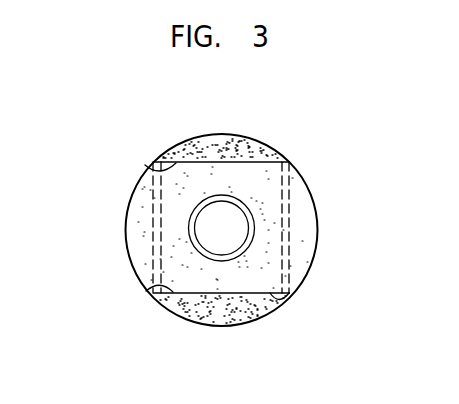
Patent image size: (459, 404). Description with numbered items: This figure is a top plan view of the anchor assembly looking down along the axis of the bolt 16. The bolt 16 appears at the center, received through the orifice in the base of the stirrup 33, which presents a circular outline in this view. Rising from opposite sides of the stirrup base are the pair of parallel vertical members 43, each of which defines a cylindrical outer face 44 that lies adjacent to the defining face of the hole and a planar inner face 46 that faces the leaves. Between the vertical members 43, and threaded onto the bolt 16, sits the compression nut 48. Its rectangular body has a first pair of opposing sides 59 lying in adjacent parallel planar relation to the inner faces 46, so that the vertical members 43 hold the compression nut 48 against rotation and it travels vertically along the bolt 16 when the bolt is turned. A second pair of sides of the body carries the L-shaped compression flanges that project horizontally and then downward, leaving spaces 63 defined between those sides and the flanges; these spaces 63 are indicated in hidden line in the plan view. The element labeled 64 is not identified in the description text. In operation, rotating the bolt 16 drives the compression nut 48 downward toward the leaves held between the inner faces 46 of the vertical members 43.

The bolt 16 is at (226, 229).
The stirrup 33 is at (193, 322).
The vertical members 43 is at (251, 141).
The cylindrical outer face 44 is at (222, 134).
The planar inner face 46 is at (145, 165).
The compression nut 48 is at (316, 224).
The first pair of opposing sides 59 is at (198, 162).
The spaces 63 is at (152, 256).
The side surface 64 is at (132, 199).